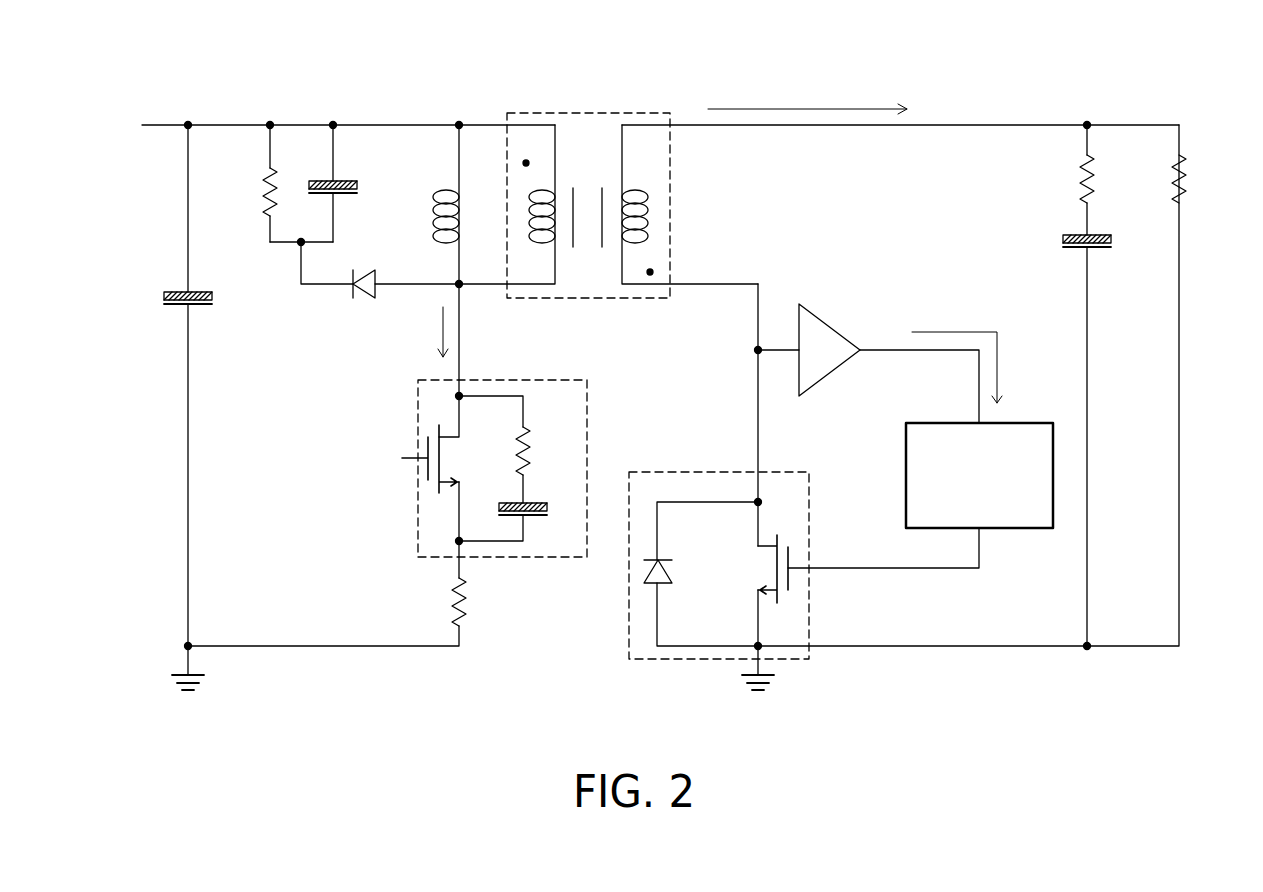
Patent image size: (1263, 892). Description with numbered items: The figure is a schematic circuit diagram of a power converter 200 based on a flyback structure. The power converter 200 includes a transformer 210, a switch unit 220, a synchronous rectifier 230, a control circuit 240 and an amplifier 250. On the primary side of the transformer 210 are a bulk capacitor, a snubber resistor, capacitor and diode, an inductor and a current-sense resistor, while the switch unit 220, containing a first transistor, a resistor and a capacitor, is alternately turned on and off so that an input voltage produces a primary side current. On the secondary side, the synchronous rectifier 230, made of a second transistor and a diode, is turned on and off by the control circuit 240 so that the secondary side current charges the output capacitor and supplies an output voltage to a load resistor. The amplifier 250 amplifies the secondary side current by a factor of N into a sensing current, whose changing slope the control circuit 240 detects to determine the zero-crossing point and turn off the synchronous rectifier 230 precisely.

The power converter 200 is at (672, 399).
The transformer 210 is at (615, 113).
The switch unit 220 is at (532, 380).
The synchronous rectifier 230 is at (687, 472).
The control circuit 240 is at (998, 531).
The amplifier 250 is at (838, 328).